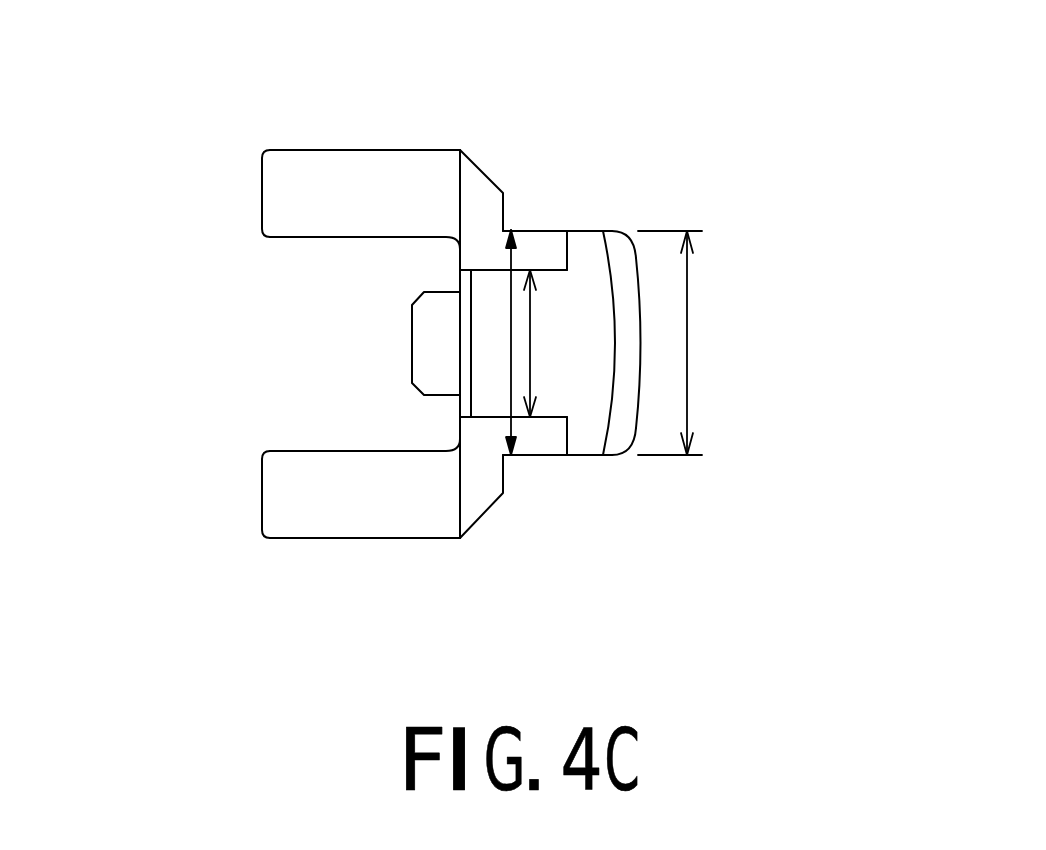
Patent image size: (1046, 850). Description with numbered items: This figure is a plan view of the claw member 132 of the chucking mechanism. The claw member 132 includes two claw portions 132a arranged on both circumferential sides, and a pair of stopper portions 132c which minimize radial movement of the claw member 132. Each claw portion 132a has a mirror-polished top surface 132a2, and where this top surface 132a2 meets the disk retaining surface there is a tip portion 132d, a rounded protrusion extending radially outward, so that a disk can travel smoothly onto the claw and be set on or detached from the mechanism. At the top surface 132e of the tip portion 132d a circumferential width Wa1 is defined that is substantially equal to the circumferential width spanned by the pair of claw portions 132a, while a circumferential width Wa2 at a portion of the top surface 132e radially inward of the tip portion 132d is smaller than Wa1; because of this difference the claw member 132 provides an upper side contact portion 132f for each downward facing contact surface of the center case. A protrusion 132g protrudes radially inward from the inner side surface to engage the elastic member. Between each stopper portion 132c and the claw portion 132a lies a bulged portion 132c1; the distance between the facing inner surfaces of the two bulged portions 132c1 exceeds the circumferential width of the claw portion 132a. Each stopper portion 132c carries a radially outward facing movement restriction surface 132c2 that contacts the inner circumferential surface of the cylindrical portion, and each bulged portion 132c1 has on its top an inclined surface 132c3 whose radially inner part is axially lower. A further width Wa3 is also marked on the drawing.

The claw member 132 is at (240, 73).
The stopper portion 132c is at (340, 150).
The bulged portion 132c1 is at (263, 157).
The movement restriction surface 132c2 is at (507, 213).
The inclined surface 132c3 is at (287, 205).
The claw portion 132a is at (639, 272).
The top surface 132a2 is at (580, 255).
The tip portion 132d is at (640, 347).
The top surface 132e is at (590, 372).
The upper side contact portion 132f is at (552, 245).
The protrusion 132g is at (412, 333).
The circumferential width Wa1 is at (702, 343).
The circumferential width Wa2 is at (568, 343).
The width between chamfered surfaces Wa3 is at (500, 312).